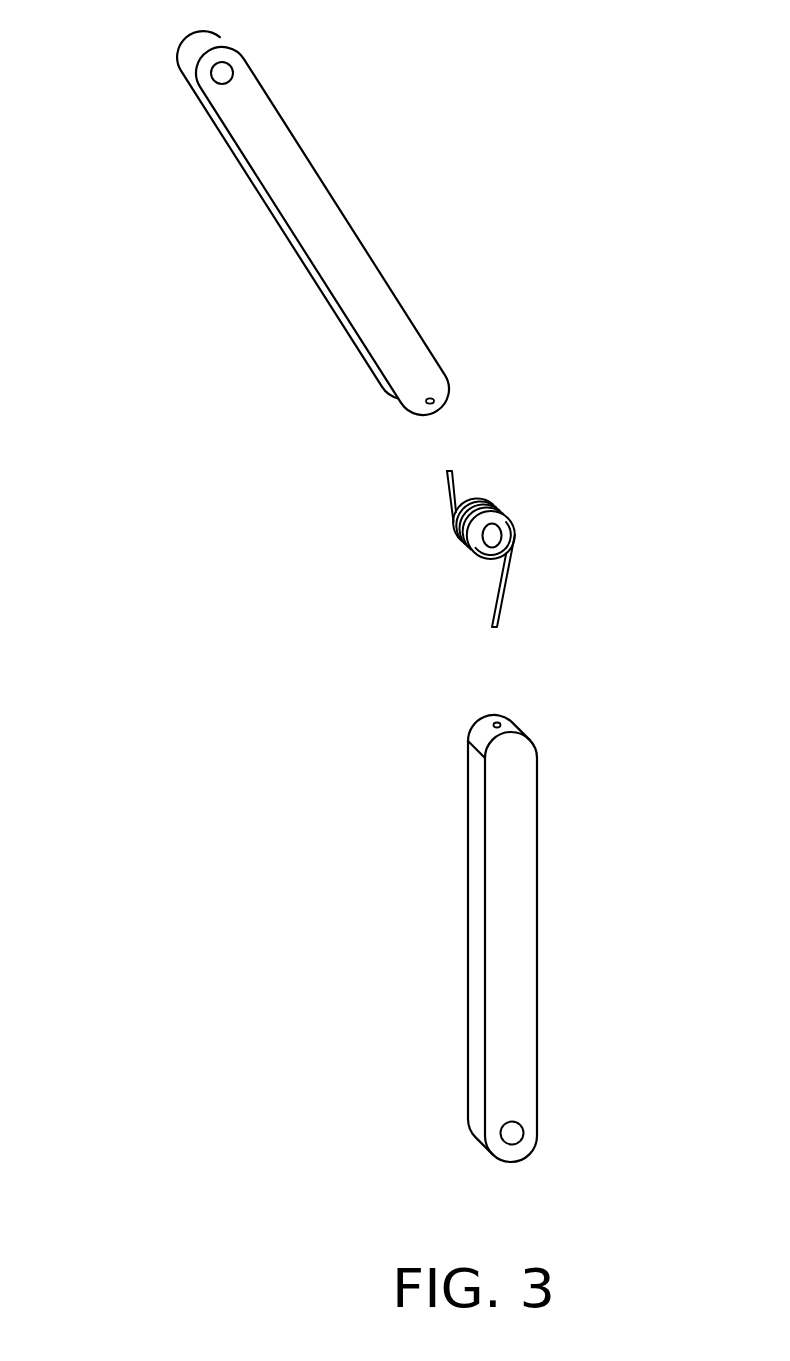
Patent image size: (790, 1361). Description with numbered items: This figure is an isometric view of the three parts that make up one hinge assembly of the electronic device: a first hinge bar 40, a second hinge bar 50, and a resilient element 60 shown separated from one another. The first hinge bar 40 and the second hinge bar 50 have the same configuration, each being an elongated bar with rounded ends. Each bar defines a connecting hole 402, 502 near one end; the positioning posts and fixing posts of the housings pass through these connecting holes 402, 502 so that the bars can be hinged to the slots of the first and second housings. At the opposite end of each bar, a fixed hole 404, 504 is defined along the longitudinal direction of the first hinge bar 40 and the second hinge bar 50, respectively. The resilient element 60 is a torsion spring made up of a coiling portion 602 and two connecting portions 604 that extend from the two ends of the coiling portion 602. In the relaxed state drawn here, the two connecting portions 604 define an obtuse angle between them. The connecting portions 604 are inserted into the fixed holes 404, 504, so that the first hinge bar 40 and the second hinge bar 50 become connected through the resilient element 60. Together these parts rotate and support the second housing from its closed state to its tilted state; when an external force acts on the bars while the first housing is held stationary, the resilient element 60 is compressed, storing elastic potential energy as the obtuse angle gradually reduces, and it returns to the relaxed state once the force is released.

The first hinge bar 40 is at (512, 848).
The connecting hole 402 is at (512, 1133).
The fixed hole 404 is at (500, 720).
The second hinge bar 50 is at (305, 218).
The connecting hole 502 is at (222, 75).
The fixed hole 504 is at (433, 401).
The resilient element 60 is at (479, 546).
The coiling portion 602 is at (463, 550).
The connecting portion 604 is at (448, 492).